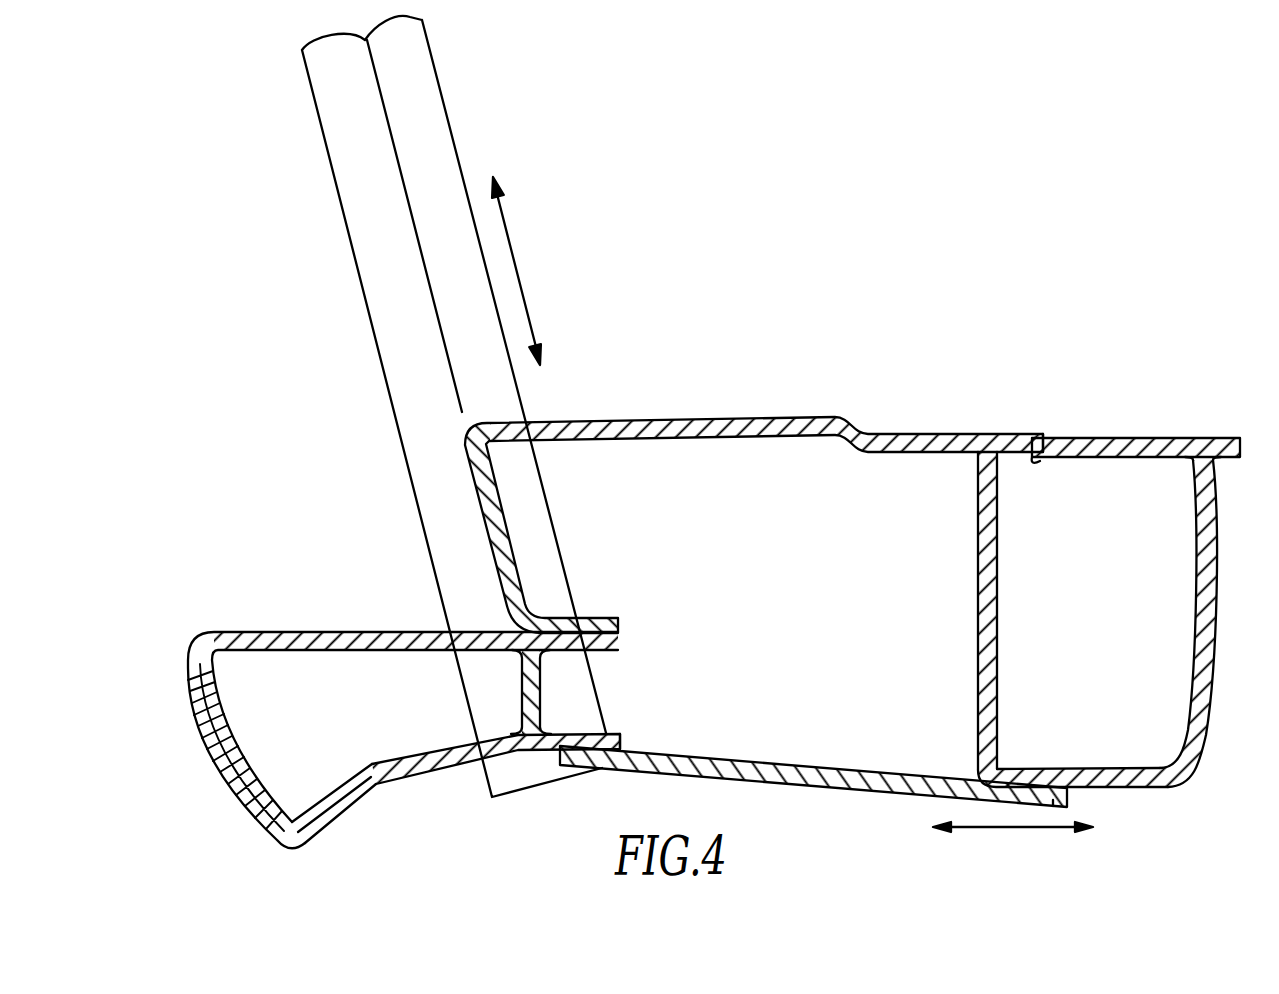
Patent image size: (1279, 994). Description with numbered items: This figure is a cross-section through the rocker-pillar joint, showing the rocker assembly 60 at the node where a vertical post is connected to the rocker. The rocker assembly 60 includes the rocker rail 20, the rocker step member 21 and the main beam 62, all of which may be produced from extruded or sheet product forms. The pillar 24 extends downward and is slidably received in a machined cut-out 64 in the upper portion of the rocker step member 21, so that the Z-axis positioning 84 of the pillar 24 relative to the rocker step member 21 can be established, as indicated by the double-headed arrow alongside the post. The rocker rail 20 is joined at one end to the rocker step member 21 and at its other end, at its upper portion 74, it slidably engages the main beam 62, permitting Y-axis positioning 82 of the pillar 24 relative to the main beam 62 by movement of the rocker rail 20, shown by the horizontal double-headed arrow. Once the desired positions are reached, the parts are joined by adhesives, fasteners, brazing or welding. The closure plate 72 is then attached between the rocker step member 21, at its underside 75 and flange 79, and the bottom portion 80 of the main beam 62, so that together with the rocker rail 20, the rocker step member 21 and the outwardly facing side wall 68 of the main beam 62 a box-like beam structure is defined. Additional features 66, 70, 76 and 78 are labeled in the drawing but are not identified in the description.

The rocker rail 20 is at (794, 576).
The rocker step member 21 is at (474, 715).
The pillar 24 is at (520, 398).
The rocker assembly 60 is at (1105, 613).
The main beam 62 is at (1222, 583).
The machined cut-out 64 is at (583, 420).
The bottom wall of housing 66 is at (752, 762).
The side wall of main beam 68 is at (978, 570).
The inner surface 70 is at (495, 492).
The closure plate 72 is at (253, 632).
The upper portion of rocker rail 74 is at (1025, 434).
The underside of rocker step member 75 is at (345, 808).
The tab 76 is at (1070, 802).
The top wall of cover 78 is at (1130, 438).
The flange 79 is at (622, 745).
The bottom portion of main beam 80 is at (1140, 787).
The Y-axis positioning 82 is at (997, 829).
The Z-axis positioning 84 is at (510, 245).